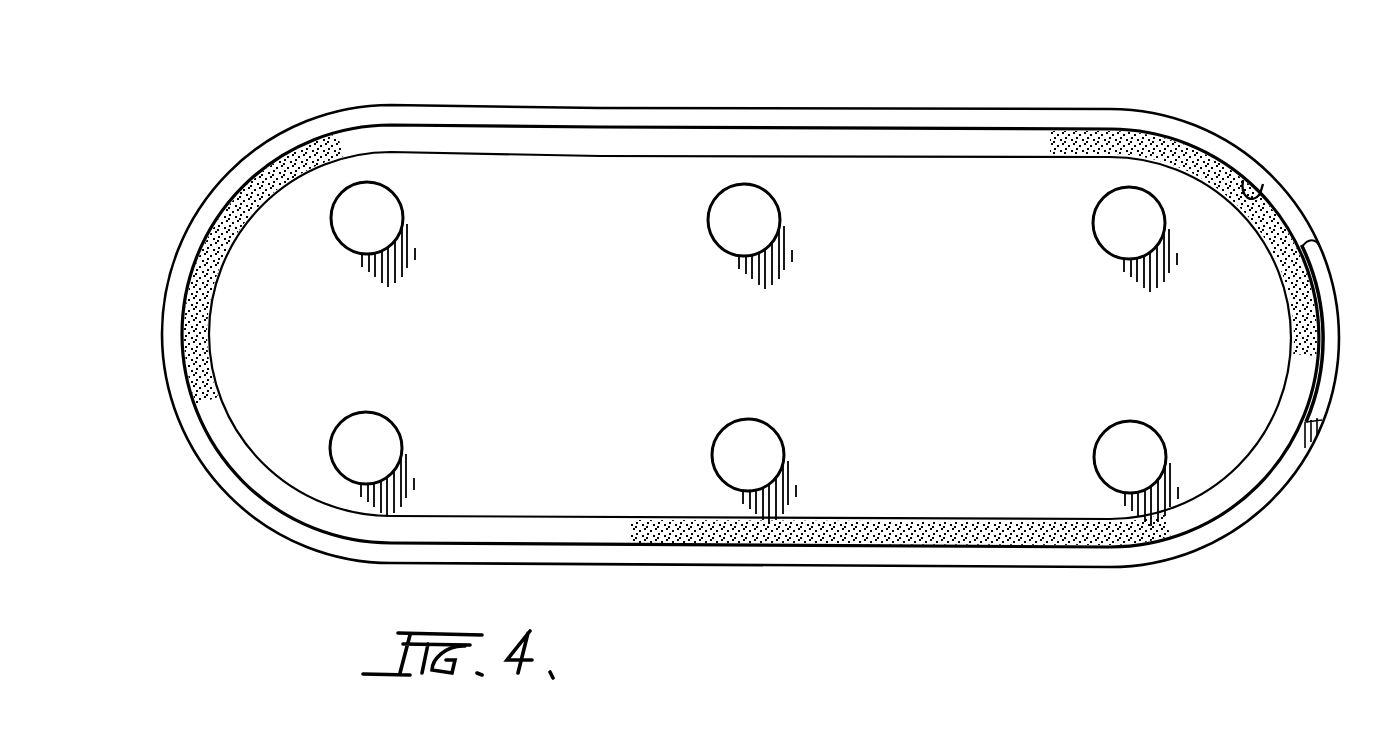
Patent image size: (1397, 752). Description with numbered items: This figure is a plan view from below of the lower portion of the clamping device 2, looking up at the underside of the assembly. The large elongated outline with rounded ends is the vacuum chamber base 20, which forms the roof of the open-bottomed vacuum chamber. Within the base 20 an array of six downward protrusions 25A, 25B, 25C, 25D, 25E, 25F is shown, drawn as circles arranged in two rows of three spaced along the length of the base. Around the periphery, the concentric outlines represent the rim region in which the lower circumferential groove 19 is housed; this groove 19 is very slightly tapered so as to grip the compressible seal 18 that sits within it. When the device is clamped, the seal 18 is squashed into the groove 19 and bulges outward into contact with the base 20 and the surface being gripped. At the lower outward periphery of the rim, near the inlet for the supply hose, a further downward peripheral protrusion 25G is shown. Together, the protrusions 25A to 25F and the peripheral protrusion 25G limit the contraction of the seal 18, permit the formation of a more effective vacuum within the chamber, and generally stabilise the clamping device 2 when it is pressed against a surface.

The clamping device 2 is at (168, 390).
The compressible seal 18 is at (1322, 236).
The lower circumferential groove 19 is at (1250, 182).
The vacuum chamber base 20 is at (656, 351).
The downward protrusion 25A is at (363, 202).
The downward protrusion 25B is at (745, 207).
The downward protrusion 25C is at (1125, 205).
The downward protrusion 25D is at (355, 457).
The downward protrusion 25E is at (745, 470).
The downward protrusion 25F is at (1118, 470).
The downward peripheral protrusion 25G is at (1334, 308).